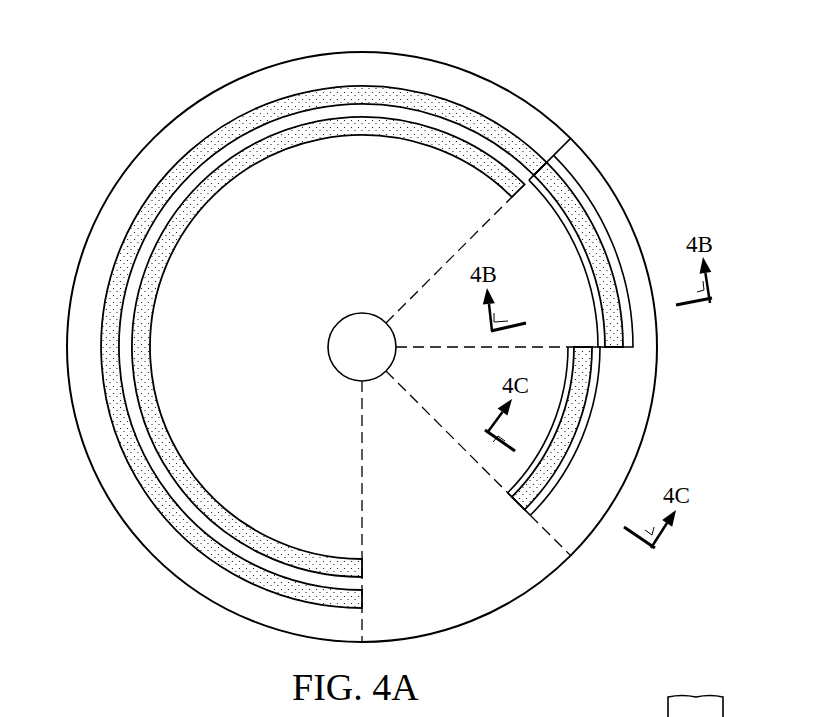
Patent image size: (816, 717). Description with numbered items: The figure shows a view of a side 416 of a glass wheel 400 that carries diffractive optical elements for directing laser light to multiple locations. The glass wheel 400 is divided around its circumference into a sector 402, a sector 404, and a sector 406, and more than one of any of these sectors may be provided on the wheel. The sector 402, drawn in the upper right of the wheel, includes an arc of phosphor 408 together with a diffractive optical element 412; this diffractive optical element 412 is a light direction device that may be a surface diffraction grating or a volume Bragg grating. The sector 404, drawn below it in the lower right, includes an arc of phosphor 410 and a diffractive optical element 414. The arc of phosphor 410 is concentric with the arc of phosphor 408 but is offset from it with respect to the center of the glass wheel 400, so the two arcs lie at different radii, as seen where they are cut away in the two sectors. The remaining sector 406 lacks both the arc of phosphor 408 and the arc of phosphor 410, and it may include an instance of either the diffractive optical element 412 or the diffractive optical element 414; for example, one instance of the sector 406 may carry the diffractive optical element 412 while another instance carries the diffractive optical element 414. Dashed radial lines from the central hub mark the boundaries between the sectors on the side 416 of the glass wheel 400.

The glass wheel 400 is at (281, 53).
The sector 402 is at (655, 416).
The sector 404 is at (639, 431).
The sector 406 is at (507, 632).
The arc of phosphor 408 is at (562, 191).
The arc of phosphor 410 is at (578, 393).
The diffractive optical element 412 is at (597, 220).
The diffractive optical element 414 is at (578, 437).
The side 416 is at (461, 79).